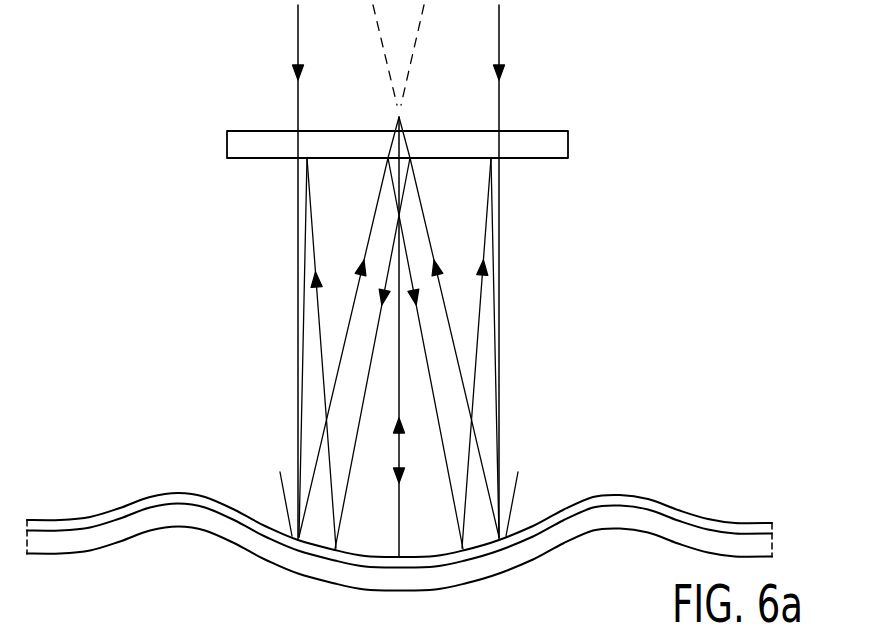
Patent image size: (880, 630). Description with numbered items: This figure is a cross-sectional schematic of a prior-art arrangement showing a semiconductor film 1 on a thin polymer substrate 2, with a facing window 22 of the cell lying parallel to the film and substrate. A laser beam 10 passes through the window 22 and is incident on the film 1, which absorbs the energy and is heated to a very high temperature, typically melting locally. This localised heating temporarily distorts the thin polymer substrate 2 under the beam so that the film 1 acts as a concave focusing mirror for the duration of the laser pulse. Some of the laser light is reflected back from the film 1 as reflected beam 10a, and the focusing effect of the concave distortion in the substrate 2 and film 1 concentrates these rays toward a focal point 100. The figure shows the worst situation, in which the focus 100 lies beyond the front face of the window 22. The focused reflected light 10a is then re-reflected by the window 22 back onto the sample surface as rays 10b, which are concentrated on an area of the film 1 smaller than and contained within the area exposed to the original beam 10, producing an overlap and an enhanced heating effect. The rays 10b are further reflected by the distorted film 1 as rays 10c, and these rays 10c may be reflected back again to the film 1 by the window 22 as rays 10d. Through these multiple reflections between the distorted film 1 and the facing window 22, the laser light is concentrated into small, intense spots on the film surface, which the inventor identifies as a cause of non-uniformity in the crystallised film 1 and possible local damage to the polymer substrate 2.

The semiconductor film 1 is at (63, 525).
The polymer substrate 2 is at (102, 537).
The laser beam 10 is at (298, 40).
The reflected beam 10a is at (372, 231).
The re-reflected rays 10b is at (360, 406).
The further reflected rays 10c is at (318, 308).
The re-reflected rays 10d is at (281, 490).
The window 22 is at (242, 143).
The focal point 100 is at (401, 115).